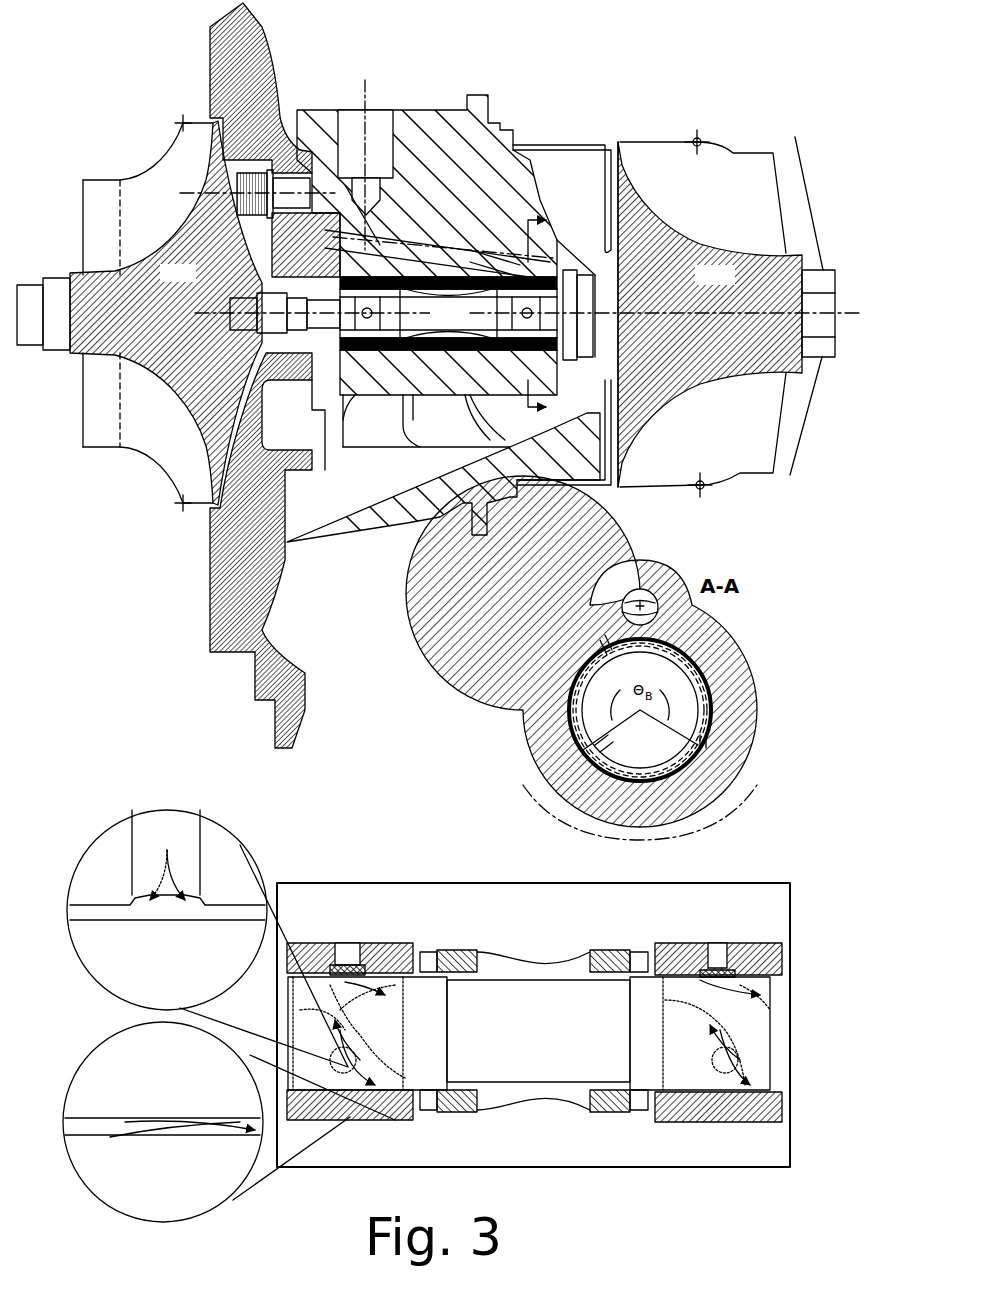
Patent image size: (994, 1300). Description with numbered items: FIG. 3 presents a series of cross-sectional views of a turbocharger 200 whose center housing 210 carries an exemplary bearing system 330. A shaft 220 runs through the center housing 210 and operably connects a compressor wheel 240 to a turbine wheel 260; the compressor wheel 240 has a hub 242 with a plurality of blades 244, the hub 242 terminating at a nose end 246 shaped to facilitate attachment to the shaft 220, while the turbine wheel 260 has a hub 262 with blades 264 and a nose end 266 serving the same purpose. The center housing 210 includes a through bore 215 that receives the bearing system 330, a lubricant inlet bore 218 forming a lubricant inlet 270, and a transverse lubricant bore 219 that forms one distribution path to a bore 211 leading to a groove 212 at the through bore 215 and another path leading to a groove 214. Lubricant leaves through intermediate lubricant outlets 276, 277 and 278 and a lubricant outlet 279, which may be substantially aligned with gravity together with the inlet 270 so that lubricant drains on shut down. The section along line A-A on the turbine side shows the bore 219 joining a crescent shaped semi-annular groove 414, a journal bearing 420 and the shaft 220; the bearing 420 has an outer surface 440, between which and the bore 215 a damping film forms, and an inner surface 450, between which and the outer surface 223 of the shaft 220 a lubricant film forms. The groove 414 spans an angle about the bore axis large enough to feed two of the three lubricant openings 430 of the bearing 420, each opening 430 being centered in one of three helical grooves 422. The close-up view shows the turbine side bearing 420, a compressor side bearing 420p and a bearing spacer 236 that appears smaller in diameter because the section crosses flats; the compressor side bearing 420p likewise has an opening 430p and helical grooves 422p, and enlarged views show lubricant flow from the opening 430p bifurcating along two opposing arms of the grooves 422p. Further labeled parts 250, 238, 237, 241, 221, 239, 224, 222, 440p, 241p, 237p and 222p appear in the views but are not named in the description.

The turbocharger 200 is at (125, 25).
The compressor wheel 240 is at (125, 130).
The blades 244 is at (166, 211).
The hub 242 is at (195, 287).
The nose end 246 is at (27, 343).
The backplate 250 is at (212, 595).
The lubricant inlet 270 is at (383, 92).
The center housing 210 is at (463, 156).
The lubricant inlet bore 218 is at (383, 154).
The bore 211 is at (360, 240).
The groove 212 is at (378, 248).
The groove 214 is at (524, 240).
The transverse lubricant bore 219 is at (455, 240).
The shaft 220 is at (466, 324).
The intermediate lubricant outlet 276 is at (342, 385).
The through bore 215 is at (403, 395).
The intermediate lubricant outlet 278 is at (467, 395).
The intermediate lubricant outlet 277 is at (570, 380).
The bearing system 330 is at (466, 372).
The lubricant outlet 279 is at (375, 540).
The turbine wheel 260 is at (718, 92).
The hub 262 is at (726, 314).
The blades 264 is at (757, 219).
The nose end 266 is at (795, 137).
The outer surface 440 is at (612, 640).
The journal bearing 420 is at (598, 622).
The inner surface 450 is at (595, 655).
The semi-annular groove 414 is at (585, 658).
The outer surface 223 is at (605, 702).
The lubricant opening 430 is at (712, 943).
The helical groove 422 is at (768, 1003).
The spacer sleeve 238 is at (470, 950).
The shaft relief 237 is at (545, 960).
The shaft shoulder 241 is at (633, 950).
The shaft journal 221 is at (548, 980).
The spacer sleeve 239 is at (600, 975).
The bearing spacer 236 is at (465, 1112).
The shaft 224 is at (555, 1076).
The inner race 222 is at (673, 1078).
The outer race (compressor side) 440p is at (350, 959).
The compressor side bearing 420p is at (350, 1105).
The opening 430p is at (352, 1065).
The helical groove 422p is at (370, 1080).
The shaft shoulder (compressor side) 241p is at (422, 1112).
The shaft relief (compressor side) 237p is at (530, 1105).
The inner race (compressor side) 222p is at (402, 1035).